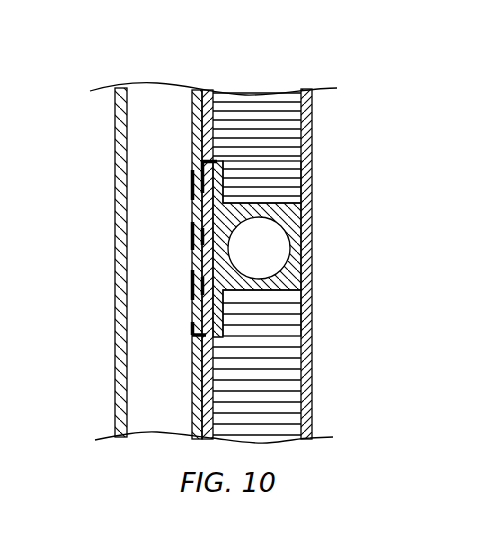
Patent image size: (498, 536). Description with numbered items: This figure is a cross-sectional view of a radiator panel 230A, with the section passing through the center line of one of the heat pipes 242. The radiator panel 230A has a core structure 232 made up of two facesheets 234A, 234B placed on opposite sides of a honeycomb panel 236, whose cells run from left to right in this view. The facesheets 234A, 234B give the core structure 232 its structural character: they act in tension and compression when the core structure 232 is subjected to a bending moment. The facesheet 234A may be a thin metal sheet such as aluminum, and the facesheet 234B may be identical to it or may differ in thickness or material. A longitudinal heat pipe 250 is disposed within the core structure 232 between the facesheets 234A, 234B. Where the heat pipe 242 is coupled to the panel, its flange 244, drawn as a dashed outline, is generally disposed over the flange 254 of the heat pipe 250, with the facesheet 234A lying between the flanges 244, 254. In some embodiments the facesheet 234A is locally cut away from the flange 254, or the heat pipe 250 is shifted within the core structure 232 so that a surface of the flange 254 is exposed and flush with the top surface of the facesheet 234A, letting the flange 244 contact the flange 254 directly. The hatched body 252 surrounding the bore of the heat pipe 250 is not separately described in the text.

The radiator panel 230A is at (199, 44).
The core structure 232 is at (313, 77).
The facesheet 234A is at (210, 128).
The facesheet 234B is at (303, 172).
The honeycomb panel 236 is at (250, 150).
The heat pipe 242 is at (117, 292).
The flange 244 is at (192, 220).
The heat pipe 250 is at (317, 220).
The hatched block 252 is at (290, 277).
The flange 254 is at (223, 316).